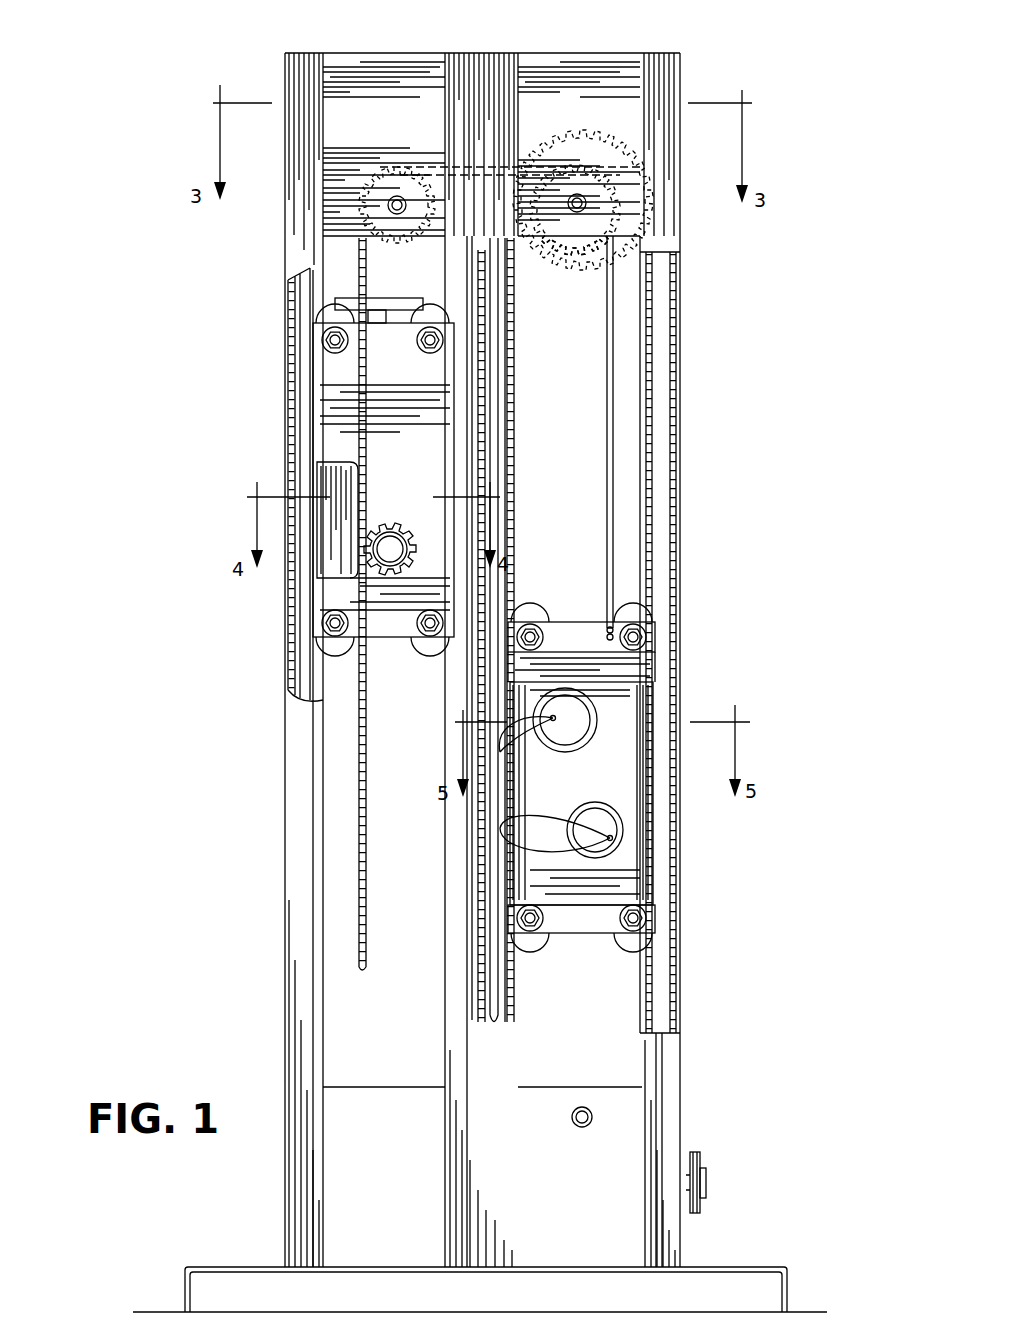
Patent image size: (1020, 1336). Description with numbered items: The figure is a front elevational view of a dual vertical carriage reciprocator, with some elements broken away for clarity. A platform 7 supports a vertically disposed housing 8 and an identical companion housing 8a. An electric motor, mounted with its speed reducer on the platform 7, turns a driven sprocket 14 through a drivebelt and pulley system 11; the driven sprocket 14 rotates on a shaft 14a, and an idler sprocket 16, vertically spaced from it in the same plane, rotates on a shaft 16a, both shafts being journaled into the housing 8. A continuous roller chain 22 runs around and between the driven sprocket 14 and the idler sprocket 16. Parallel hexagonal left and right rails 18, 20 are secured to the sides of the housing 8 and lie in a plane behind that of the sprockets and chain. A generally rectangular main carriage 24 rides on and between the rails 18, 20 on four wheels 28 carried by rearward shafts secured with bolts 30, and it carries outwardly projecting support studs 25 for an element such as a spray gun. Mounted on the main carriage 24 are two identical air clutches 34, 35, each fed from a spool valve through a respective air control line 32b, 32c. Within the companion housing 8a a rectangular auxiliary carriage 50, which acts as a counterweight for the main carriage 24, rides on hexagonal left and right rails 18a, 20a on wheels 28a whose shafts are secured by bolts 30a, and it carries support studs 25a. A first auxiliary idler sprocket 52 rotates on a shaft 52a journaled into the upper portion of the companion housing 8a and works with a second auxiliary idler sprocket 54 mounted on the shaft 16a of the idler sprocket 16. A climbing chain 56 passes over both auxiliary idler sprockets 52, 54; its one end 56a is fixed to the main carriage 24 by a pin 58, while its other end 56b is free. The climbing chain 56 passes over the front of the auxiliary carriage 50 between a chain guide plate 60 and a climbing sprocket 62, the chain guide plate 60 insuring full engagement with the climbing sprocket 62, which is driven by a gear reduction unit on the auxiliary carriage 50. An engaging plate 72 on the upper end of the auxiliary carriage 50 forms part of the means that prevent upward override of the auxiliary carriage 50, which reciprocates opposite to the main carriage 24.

The platform 7 is at (720, 1267).
The housing 8 is at (546, 53).
The companion housing 8a is at (358, 53).
The drivebelt and pulley system 11 is at (695, 1152).
The driven sprocket 14 is at (548, 1056).
The shaft 14a is at (582, 1108).
The idler sprocket 16 is at (540, 252).
The shaft 16a is at (578, 212).
The left rail 18 is at (492, 962).
The left rail 18a is at (300, 296).
The right rail 20 is at (664, 1008).
The right rail 20a is at (500, 322).
The roller chain 22 is at (658, 460).
The main carriage 24 is at (580, 720).
The support studs 25 is at (646, 638).
The support studs 25a is at (330, 343).
The wheel 28 is at (525, 620).
The wheel 28a is at (430, 318).
The bolts 30 is at (538, 642).
The bolts 30a is at (428, 346).
The air control line 32b is at (500, 752).
The air control line 32c is at (500, 828).
The air clutch 34 is at (572, 742).
The air clutch 35 is at (572, 830).
The auxiliary carriage 50 is at (383, 480).
The first auxiliary idler sprocket 52 is at (388, 190).
The shaft 52a is at (388, 206).
The second auxiliary idler sprocket 54 is at (660, 189).
The climbing chain 56 is at (607, 395).
The end of climbing chain 56a is at (609, 627).
The end of climbing chain 56b is at (365, 968).
The pin 58 is at (595, 639).
The chain guide plate 60 is at (325, 465).
The climbing sprocket 62 is at (388, 545).
The engaging plate 72 is at (375, 300).